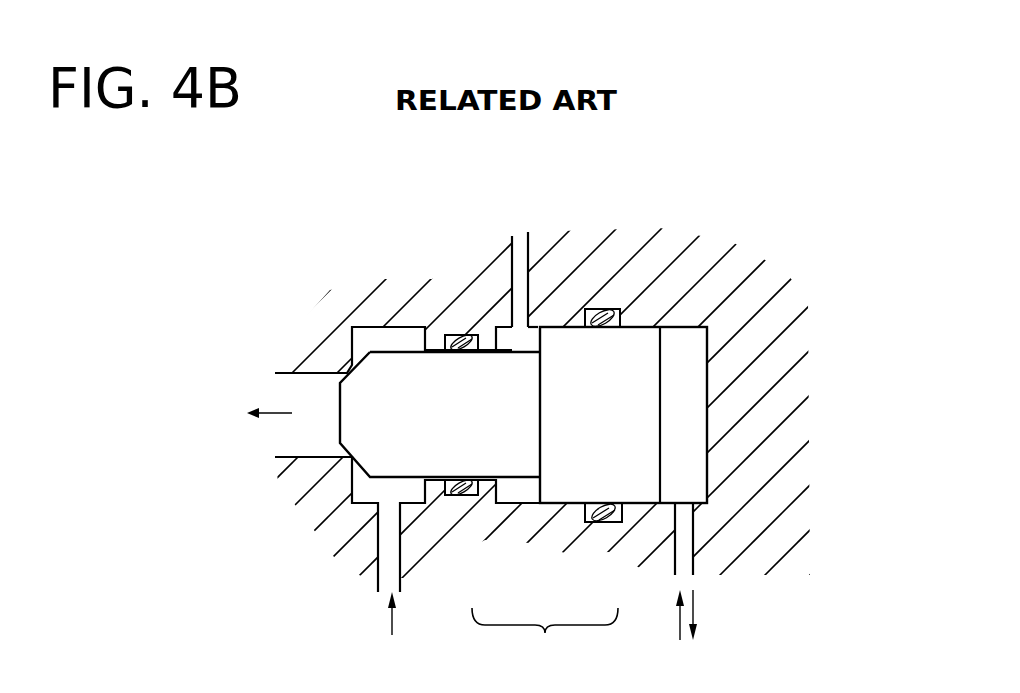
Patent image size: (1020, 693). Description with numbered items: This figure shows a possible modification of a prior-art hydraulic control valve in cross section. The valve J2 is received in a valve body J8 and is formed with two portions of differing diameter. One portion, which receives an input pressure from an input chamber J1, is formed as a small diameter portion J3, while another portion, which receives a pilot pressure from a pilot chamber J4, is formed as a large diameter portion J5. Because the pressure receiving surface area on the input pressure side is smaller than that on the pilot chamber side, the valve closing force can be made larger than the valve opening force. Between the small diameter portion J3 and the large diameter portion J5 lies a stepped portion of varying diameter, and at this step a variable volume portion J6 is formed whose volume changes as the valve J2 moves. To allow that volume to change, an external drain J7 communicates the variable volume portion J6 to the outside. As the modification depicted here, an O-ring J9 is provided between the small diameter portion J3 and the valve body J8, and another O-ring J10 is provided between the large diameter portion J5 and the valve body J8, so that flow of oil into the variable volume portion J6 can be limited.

The input chamber J1 is at (363, 488).
The valve J2 is at (545, 643).
The small diameter portion J3 is at (433, 480).
The pilot chamber J4 is at (684, 340).
The large diameter portion J5 is at (572, 480).
The variable volume portion J6 is at (505, 338).
The external drain J7 is at (524, 249).
The valve body J8 is at (323, 347).
The O-ring J9 is at (455, 337).
The O-ring J10 is at (612, 308).